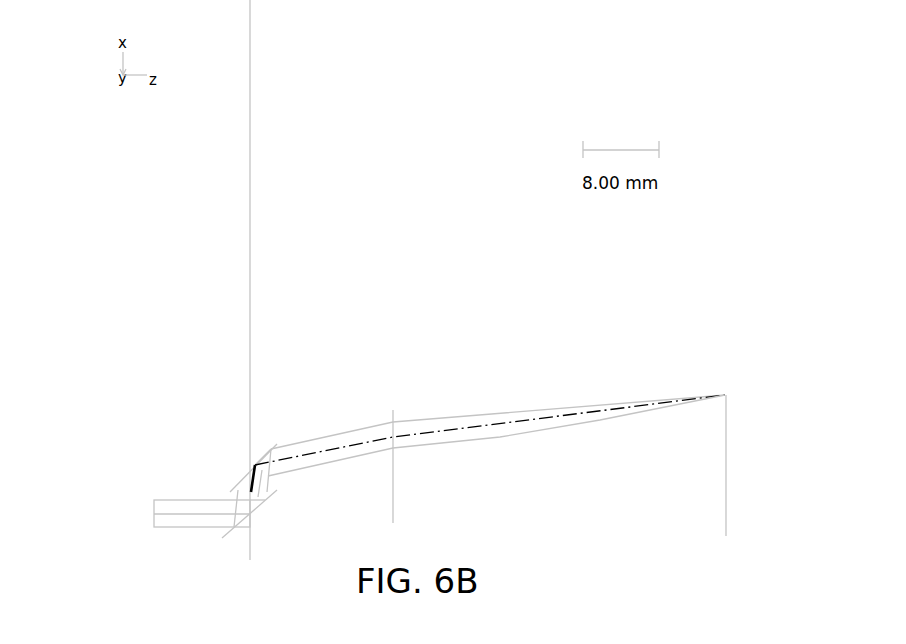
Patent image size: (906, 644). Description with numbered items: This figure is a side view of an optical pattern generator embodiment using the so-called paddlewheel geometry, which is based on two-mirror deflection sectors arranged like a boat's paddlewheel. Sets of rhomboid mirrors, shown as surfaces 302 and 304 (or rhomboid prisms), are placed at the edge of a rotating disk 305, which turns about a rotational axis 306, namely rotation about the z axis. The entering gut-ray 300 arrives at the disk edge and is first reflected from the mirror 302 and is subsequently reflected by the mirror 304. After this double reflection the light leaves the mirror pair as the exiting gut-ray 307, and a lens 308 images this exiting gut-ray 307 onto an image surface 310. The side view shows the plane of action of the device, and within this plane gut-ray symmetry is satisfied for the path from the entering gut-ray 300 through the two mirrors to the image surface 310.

The entering gut-ray 300 is at (173, 513).
The mirror 302 is at (277, 490).
The mirror 304 is at (278, 438).
The rotating disk 305 is at (250, 123).
The rotational axis 306 is at (361, 259).
The exiting gut-ray 307 is at (470, 427).
The lens 308 is at (393, 413).
The image surface 310 is at (727, 522).